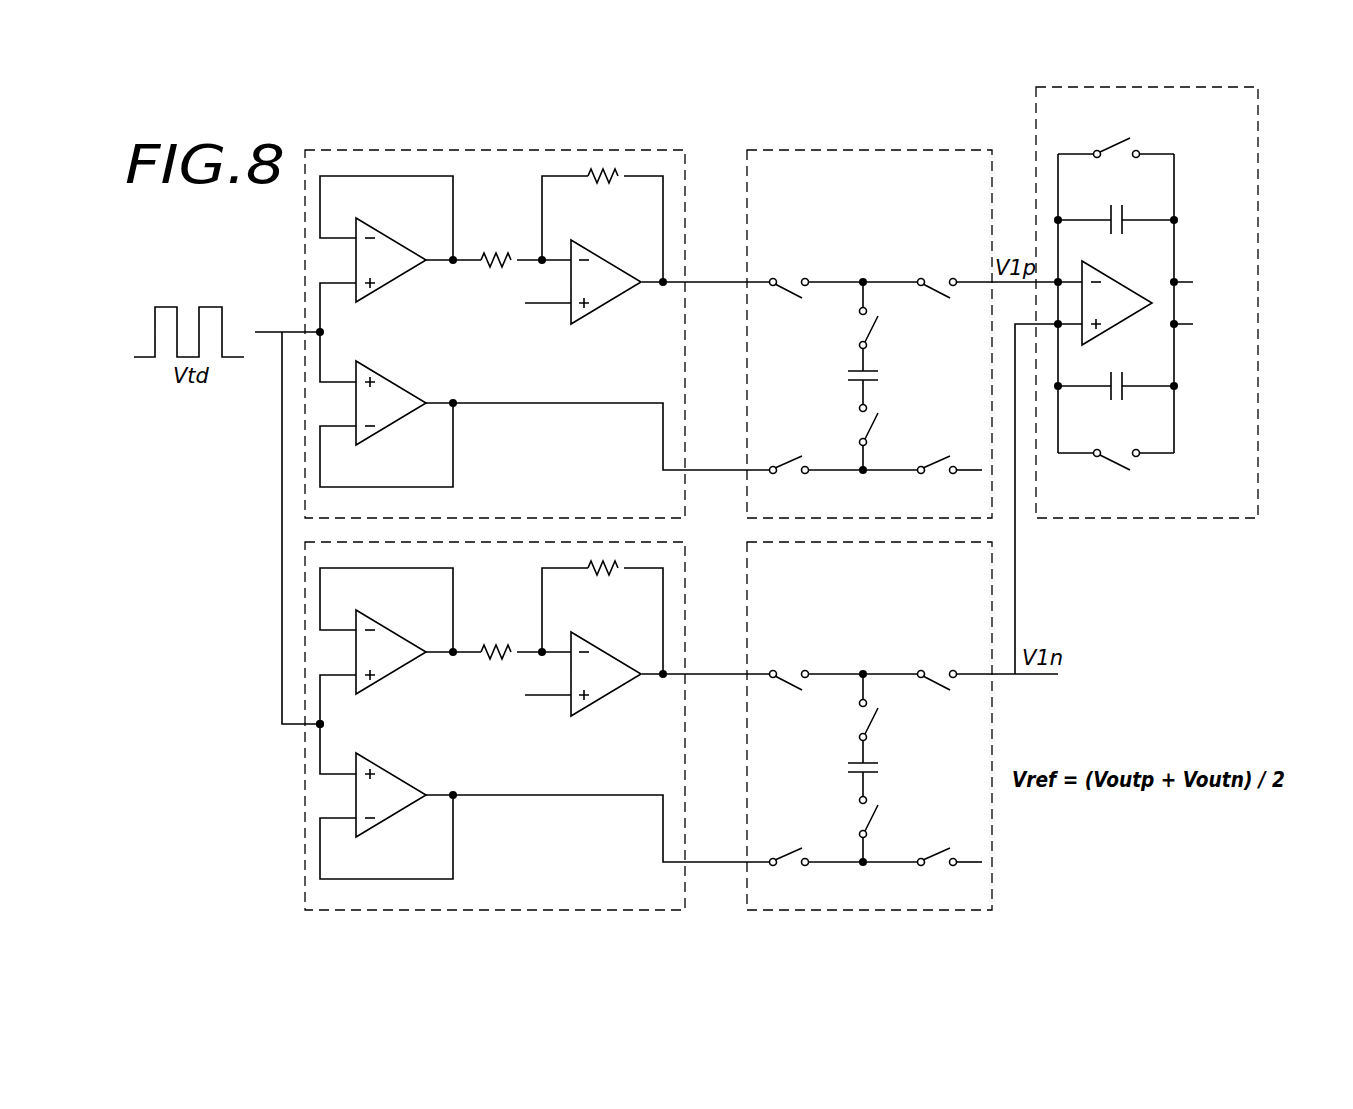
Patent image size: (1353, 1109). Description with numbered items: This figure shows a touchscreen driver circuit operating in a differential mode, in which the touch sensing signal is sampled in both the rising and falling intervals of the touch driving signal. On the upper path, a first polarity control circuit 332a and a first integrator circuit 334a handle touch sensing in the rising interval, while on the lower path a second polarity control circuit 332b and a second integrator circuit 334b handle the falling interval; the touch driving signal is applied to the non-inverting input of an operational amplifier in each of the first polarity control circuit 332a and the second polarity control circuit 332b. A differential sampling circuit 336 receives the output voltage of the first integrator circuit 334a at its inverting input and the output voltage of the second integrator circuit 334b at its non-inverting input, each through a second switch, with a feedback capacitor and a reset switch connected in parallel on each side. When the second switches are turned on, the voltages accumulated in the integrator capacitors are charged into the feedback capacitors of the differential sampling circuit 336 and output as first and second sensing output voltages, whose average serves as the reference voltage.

The first polarity control circuit 332a is at (496, 150).
The second polarity control circuit 332b is at (305, 812).
The first integrator circuit 334a is at (868, 150).
The second integrator circuit 334b is at (992, 717).
The differential sampling circuit 336 is at (1142, 518).